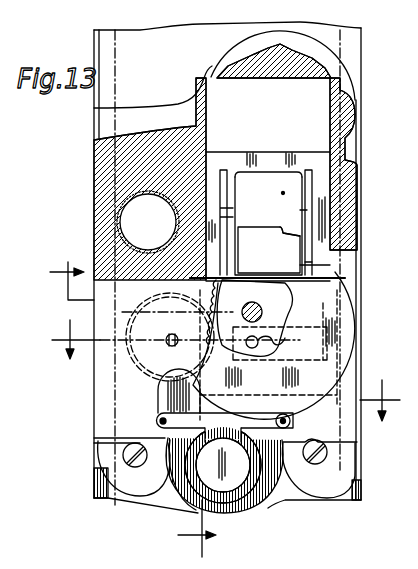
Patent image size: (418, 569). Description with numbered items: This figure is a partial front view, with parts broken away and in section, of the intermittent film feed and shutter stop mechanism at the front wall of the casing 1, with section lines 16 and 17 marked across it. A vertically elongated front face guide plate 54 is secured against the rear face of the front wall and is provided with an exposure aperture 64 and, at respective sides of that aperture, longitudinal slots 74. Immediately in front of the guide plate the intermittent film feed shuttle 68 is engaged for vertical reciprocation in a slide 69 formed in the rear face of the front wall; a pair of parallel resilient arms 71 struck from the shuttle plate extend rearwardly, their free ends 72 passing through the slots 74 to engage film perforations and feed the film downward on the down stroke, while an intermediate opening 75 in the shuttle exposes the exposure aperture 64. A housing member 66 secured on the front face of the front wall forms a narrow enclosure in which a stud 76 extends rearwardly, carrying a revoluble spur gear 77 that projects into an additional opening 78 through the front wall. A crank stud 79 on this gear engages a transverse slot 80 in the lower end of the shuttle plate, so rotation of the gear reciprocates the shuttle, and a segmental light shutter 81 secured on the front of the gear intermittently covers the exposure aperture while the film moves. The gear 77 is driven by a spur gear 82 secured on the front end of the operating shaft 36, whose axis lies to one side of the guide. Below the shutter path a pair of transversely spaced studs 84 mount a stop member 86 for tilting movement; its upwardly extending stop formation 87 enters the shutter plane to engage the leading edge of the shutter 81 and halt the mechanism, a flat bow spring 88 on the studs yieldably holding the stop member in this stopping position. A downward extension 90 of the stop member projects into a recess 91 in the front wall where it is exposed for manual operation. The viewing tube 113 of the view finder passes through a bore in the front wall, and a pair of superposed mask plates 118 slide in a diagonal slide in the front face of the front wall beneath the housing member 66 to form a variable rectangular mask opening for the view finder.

The casing 1 is at (108, 105).
The viewing tube 113 is at (118, 220).
The section line 17- 17 is at (128, 404).
The section line 16- 16 is at (226, 370).
The operating shaft 36 is at (172, 342).
The spur gear 82 is at (153, 368).
The stop formation 87 is at (166, 384).
The studs 84 is at (160, 418).
The housing member 66 is at (103, 458).
The stop member 86 is at (166, 490).
The recess 91 is at (185, 427).
The downward extension 90 is at (230, 480).
The flat bow spring 88 is at (268, 503).
The segmental light shutter 81 is at (310, 378).
The crank stud 79 is at (337, 360).
The transverse slot 80 is at (290, 337).
The stud 76 is at (267, 309).
The additional opening 78 is at (300, 290).
The free ends of arms 72 is at (333, 262).
The longitudinal slots 74 is at (313, 263).
The exposure aperture 64 is at (300, 233).
The front face guide plate 54 is at (283, 193).
The spur gear 77 is at (269, 250).
The resilient arms 71 is at (233, 187).
The intermediate opening 75 is at (258, 163).
The intermittent film feed shuttle 68 is at (265, 152).
The slide 69 is at (340, 100).
The mask plates 118 is at (396, 545).